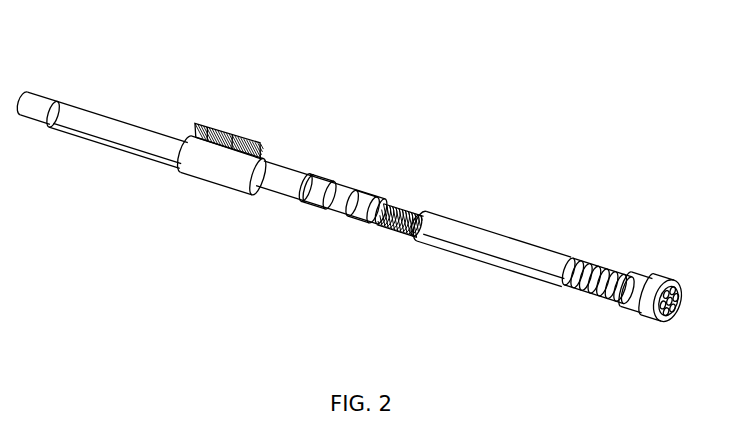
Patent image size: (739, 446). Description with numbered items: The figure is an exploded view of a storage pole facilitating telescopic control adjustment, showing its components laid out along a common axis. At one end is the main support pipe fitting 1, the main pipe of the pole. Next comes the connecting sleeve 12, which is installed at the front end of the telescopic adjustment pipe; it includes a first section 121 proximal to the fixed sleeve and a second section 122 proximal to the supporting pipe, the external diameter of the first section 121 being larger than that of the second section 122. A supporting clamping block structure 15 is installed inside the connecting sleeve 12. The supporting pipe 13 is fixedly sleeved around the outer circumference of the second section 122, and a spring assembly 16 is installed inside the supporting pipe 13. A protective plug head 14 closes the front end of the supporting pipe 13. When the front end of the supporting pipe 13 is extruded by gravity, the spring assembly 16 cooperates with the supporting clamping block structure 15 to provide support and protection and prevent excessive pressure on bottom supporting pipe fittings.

The main support pipe fitting 1 is at (121, 114).
The connecting sleeve 12 is at (342, 185).
The first section 121 is at (312, 205).
The second section 122 is at (340, 212).
The supporting clamping block structure 15 is at (397, 203).
The supporting pipe 13 is at (497, 243).
The spring assembly 16 is at (605, 262).
The protective plug head 14 is at (655, 272).